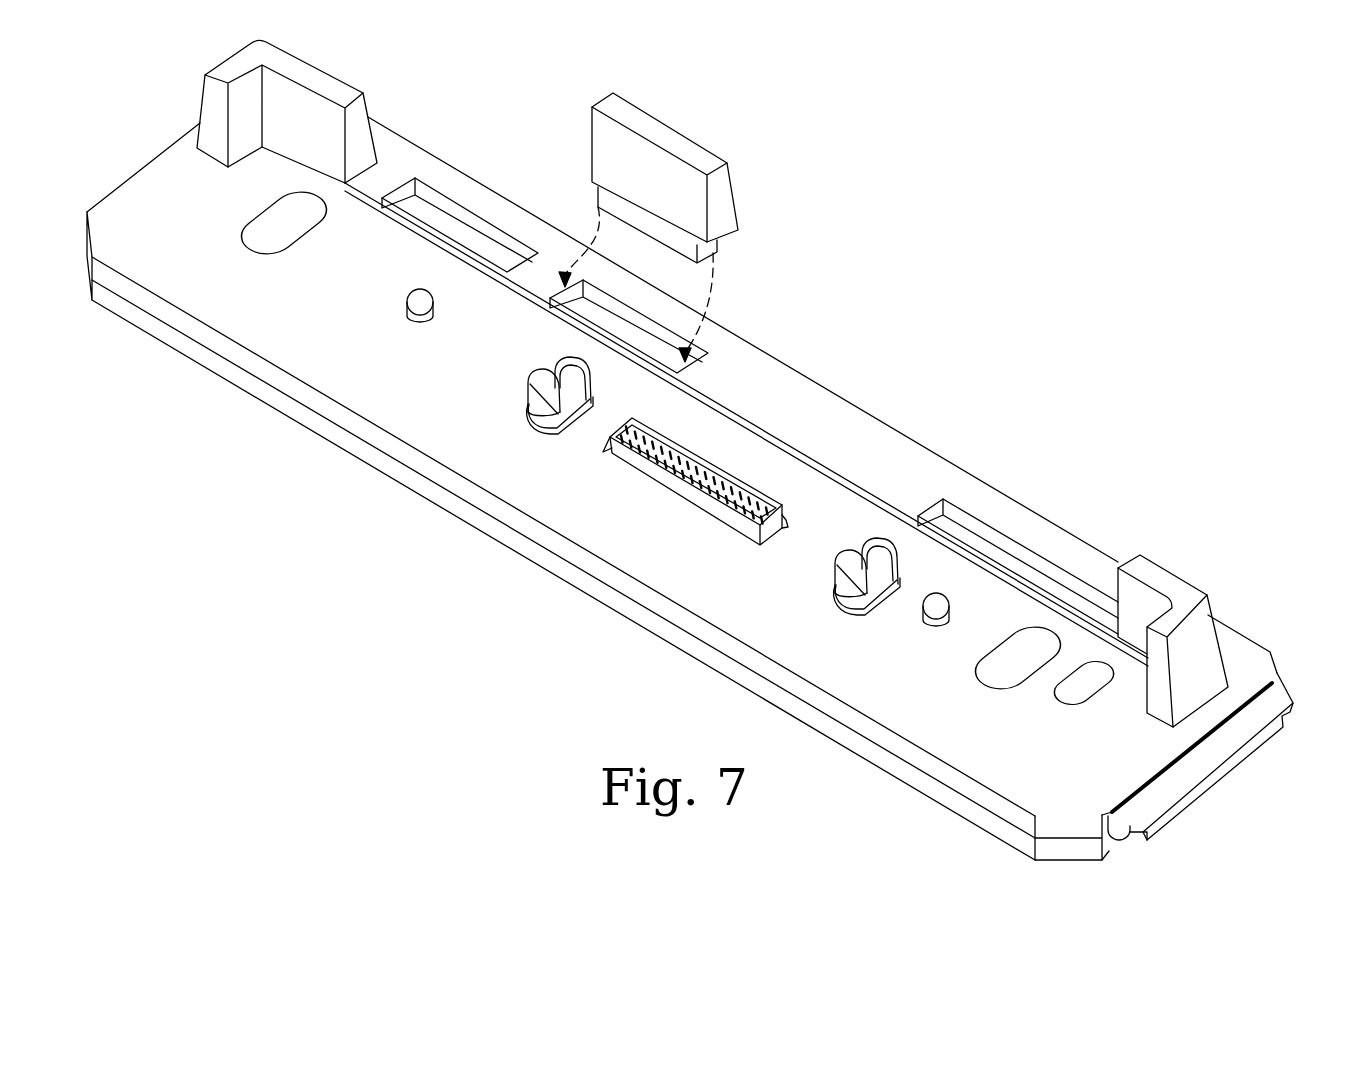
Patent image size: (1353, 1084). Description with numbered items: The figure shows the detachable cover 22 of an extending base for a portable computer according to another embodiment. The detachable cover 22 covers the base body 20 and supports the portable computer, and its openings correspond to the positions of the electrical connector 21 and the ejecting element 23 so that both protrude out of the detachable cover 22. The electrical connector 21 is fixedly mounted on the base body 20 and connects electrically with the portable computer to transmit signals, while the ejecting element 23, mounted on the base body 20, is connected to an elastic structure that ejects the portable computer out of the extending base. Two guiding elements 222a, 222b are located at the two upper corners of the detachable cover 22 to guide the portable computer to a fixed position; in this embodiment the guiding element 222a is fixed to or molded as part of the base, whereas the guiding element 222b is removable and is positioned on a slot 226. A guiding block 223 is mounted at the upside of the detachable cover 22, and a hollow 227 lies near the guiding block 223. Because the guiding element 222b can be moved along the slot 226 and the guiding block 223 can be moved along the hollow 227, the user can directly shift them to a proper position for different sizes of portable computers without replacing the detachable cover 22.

The base body 20 is at (290, 405).
The electrical connector 21 is at (670, 482).
The detachable cover 22 is at (157, 202).
The ejecting element 23 is at (543, 395).
The guiding element 222a is at (318, 80).
The guiding element 222b is at (1151, 572).
The guiding block 223 is at (638, 120).
The slot 226 is at (1005, 564).
The hollow 227 is at (437, 207).